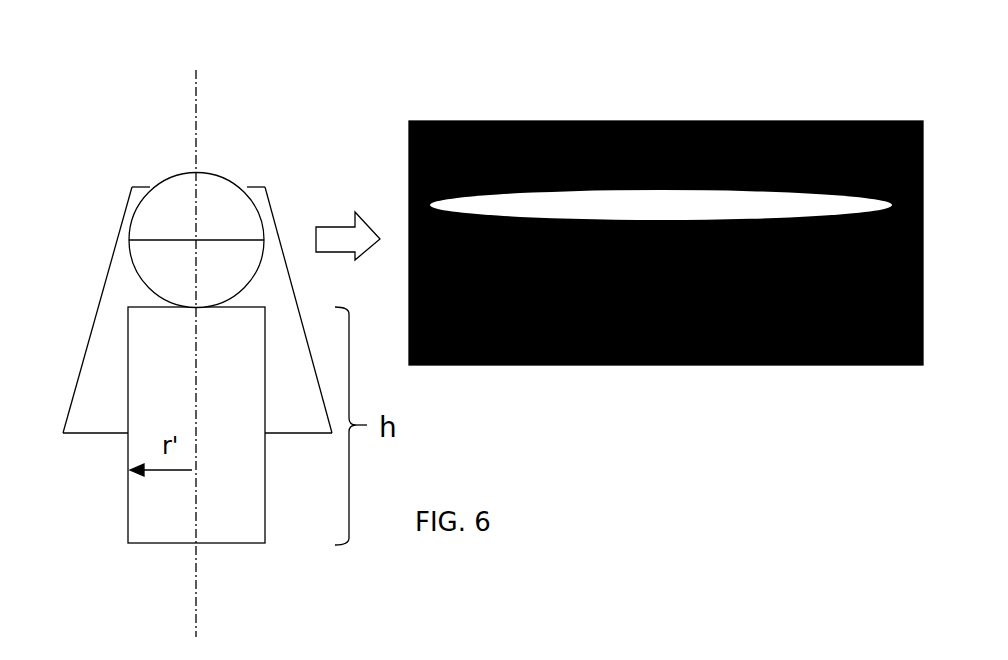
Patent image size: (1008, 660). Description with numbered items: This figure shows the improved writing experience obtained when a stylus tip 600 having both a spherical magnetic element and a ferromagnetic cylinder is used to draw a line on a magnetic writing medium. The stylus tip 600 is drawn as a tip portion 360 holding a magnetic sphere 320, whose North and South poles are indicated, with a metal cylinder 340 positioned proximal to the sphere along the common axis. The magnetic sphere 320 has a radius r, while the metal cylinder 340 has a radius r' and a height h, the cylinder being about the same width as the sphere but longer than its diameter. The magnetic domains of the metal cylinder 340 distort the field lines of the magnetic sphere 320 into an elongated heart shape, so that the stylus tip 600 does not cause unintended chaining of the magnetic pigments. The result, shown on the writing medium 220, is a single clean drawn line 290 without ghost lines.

The stylus tip 600 is at (82, 278).
The magnetic sphere 320 is at (240, 212).
The metal cylinder 340 is at (242, 520).
The tip portion 360 is at (92, 407).
The display region 220 is at (725, 121).
The light emitting pattern 290 is at (652, 215).